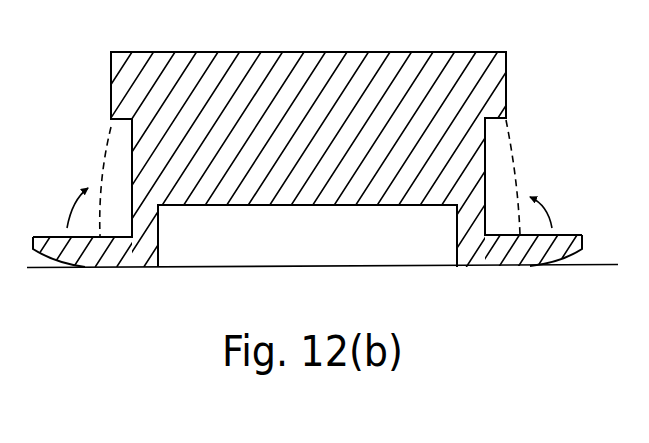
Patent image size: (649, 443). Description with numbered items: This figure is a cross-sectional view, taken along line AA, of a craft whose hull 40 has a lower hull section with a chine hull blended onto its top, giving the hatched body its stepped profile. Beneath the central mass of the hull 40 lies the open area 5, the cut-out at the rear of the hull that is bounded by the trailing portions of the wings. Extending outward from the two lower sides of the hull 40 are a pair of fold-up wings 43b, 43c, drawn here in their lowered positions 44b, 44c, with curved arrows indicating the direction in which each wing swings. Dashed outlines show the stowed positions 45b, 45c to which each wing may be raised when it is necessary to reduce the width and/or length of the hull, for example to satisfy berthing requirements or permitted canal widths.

The hull 40 is at (430, 68).
The open area 5 is at (230, 240).
The fold-up wing 43c is at (90, 272).
The fold-up wing 43b is at (540, 247).
The lowered position 44c is at (40, 212).
The lowered position 44b is at (568, 218).
The stowed position 45c is at (107, 143).
The stowed position 45b is at (516, 148).